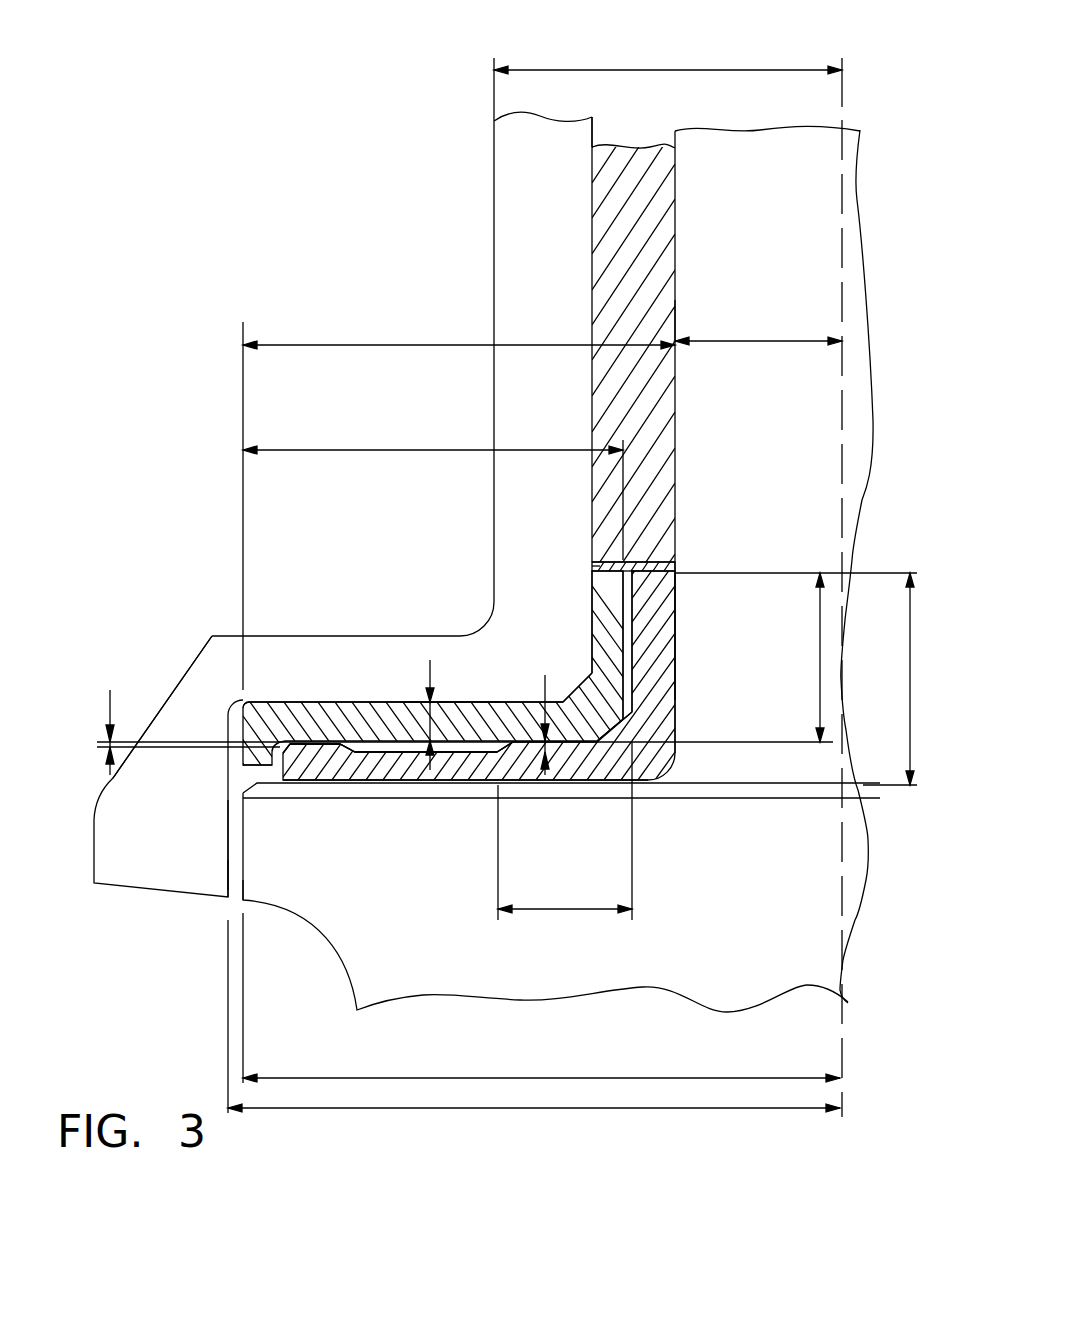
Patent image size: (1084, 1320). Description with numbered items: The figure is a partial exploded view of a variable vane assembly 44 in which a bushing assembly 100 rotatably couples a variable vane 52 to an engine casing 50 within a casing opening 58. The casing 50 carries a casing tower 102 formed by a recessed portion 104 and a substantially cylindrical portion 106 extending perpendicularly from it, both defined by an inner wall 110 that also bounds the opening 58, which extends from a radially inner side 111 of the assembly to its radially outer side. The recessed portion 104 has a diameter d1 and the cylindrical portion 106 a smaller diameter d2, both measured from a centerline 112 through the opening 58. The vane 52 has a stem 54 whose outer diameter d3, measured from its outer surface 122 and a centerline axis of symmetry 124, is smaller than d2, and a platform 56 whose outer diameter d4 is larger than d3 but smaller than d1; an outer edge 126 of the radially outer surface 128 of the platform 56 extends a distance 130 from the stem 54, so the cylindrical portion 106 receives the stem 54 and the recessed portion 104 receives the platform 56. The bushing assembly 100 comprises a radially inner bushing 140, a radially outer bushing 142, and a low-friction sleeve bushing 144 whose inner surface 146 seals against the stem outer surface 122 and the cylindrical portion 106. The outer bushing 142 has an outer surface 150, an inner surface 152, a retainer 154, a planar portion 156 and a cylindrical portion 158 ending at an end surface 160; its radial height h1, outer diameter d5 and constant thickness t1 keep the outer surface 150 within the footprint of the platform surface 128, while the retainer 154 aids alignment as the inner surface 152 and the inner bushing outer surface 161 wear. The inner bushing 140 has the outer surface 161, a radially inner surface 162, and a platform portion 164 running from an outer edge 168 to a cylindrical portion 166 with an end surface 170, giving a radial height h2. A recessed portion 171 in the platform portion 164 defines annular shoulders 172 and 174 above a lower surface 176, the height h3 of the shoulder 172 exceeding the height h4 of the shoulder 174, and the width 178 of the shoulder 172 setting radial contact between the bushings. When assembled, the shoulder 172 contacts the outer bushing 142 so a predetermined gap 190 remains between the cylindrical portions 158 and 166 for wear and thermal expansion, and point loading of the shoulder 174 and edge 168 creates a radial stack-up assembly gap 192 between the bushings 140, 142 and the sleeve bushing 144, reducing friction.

The variable vane assembly 44 is at (268, 118).
The engine casing 50 is at (190, 695).
The variable vane 52 is at (563, 970).
The variable vane stem 54 is at (775, 282).
The variable vane platform 56 is at (435, 957).
The casing opening 58 is at (228, 906).
The bushing assembly 100 is at (707, 848).
The casing tower 102 is at (223, 638).
The recessed portion 104 is at (230, 840).
The cylindrical portion 106 is at (592, 227).
The inner wall 110 is at (594, 128).
The radially inner side 111 is at (195, 1032).
The centerline 112 is at (838, 952).
The outer surface 122 is at (675, 177).
The centerline axis of symmetry 124 is at (842, 168).
The outer edge 126 is at (240, 877).
The radially outer surface 128 is at (407, 778).
The distance 130 is at (368, 345).
The radially inner bushing 140 is at (653, 693).
The radially outer bushing 142 is at (613, 640).
The sleeve bushing 144 is at (647, 415).
The inner surface 146 is at (675, 322).
The outer surface 150 is at (283, 700).
The inner surface 152 is at (360, 702).
The retainer 154 is at (243, 703).
The planar portion 156 is at (450, 700).
The cylindrical portion 158 is at (598, 614).
The end surface 160 is at (610, 562).
The outer surface 161 is at (628, 657).
The radially inner surface 162 is at (675, 640).
The platform portion 164 is at (530, 787).
The cylindrical portion 166 is at (690, 585).
The outer edge 168 is at (253, 770).
The end surface 170 is at (653, 571).
The recessed portion 171 is at (363, 766).
The shoulder 172 is at (600, 730).
The shoulder 174 is at (322, 767).
The lower surface 176 is at (468, 745).
The width 178 is at (572, 910).
The gap 190 is at (634, 555).
The radial stack up assembly gap 192 is at (578, 563).
The diameter d1 is at (595, 1108).
The diameter d2 is at (648, 70).
The outer diameter d3 is at (756, 345).
The outer diameter d4 is at (595, 1078).
The outer diameter d5 is at (368, 450).
The radial height h1 is at (818, 655).
The radial height h2 is at (908, 677).
The radial height h3 is at (545, 675).
The radial height h4 is at (110, 690).
The thickness t1 is at (430, 667).